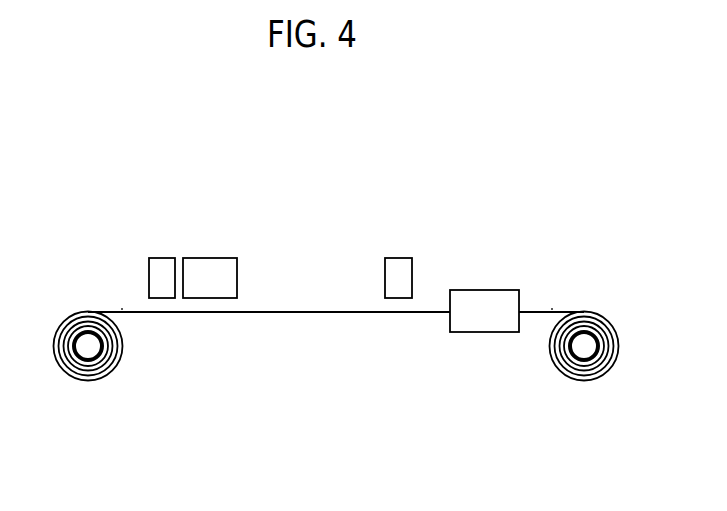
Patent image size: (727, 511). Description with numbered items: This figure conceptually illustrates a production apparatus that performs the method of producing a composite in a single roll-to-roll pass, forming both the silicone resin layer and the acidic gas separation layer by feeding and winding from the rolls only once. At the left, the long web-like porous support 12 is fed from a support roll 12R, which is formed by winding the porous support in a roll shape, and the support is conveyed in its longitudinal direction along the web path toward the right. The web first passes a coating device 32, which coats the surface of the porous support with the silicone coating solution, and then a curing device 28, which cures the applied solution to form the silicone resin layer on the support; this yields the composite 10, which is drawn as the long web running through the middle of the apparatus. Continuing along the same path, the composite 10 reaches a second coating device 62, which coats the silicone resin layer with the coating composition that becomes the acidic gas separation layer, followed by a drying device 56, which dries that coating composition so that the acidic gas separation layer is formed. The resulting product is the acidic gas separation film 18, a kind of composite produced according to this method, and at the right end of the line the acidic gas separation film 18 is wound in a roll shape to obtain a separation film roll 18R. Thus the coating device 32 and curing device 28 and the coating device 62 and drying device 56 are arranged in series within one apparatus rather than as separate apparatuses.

The composite 10 is at (325, 312).
The porous support 12 is at (123, 310).
The support roll 12R is at (90, 383).
The coating device 32 is at (160, 258).
The curing device 28 is at (215, 258).
The coating device 62 is at (395, 258).
The drying device 56 is at (483, 290).
The acidic gas separation film 18 is at (552, 310).
The separation film roll 18R is at (585, 380).